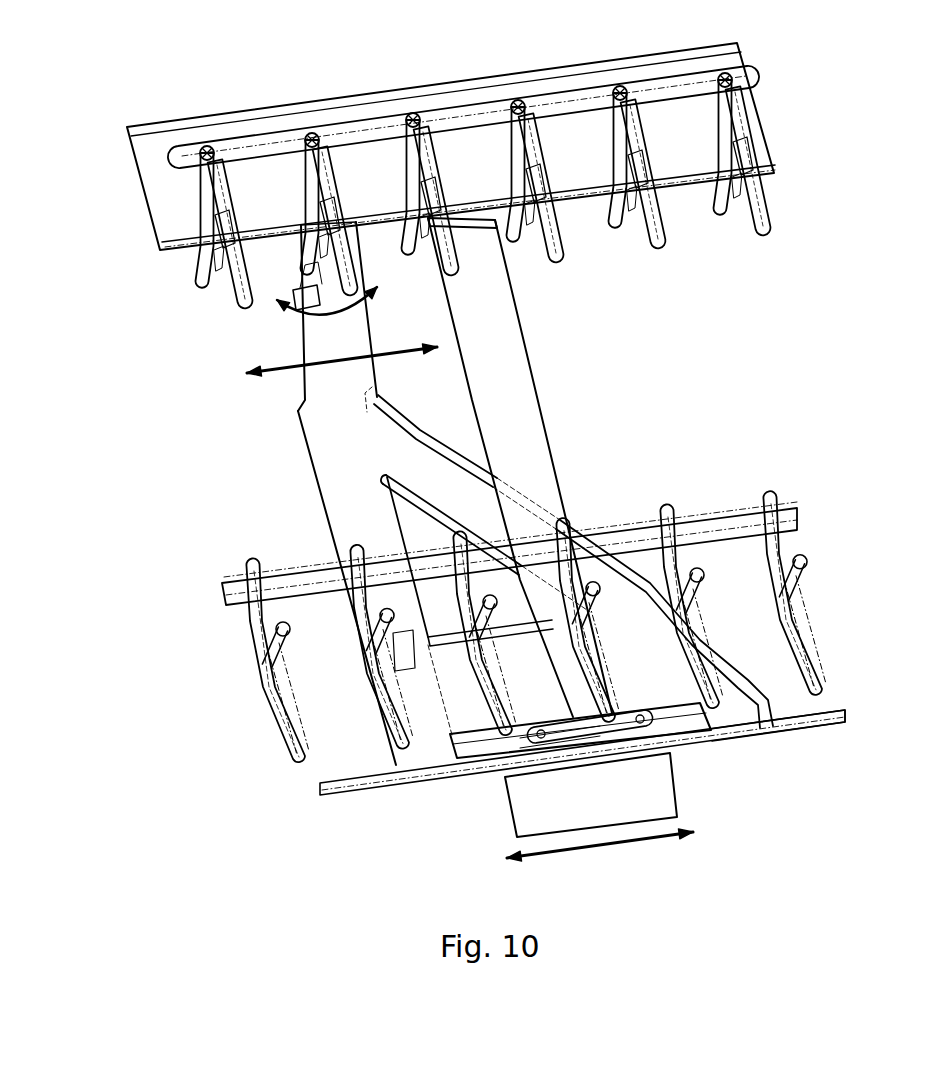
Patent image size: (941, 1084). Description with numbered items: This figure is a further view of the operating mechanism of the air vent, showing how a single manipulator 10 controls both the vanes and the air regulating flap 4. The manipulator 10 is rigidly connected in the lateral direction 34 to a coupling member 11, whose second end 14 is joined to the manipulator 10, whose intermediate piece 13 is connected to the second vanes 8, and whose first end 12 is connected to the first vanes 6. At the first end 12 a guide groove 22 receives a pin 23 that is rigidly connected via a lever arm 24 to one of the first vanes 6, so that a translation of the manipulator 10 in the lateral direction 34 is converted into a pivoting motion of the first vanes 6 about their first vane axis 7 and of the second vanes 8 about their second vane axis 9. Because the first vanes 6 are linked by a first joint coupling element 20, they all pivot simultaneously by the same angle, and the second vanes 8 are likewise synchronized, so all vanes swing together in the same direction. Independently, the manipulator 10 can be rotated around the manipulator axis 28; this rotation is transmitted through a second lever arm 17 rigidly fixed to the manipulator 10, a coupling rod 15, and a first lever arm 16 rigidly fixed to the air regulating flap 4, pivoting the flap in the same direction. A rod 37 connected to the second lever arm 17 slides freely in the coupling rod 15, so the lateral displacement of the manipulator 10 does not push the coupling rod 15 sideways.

The air regulating flap 4 is at (133, 168).
The first vanes 6 is at (770, 198).
The first vane axis 7 is at (733, 203).
The second vanes 8 is at (812, 643).
The second vane axis 9 is at (807, 573).
The manipulator 10 is at (680, 787).
The coupling member 11 is at (327, 493).
The first end 12 is at (302, 338).
The intermediate piece 13 is at (357, 622).
The second end 14 is at (390, 752).
The coupling rod 15 is at (545, 417).
The first lever arm 16 is at (497, 222).
The second lever arm 17 is at (650, 735).
The first joint coupling element 20 is at (747, 75).
The guide groove 22 is at (317, 288).
The pin 23 is at (367, 280).
The lever arm 24 is at (323, 270).
The manipulator axis 28 is at (850, 723).
The lateral direction 34 is at (280, 377).
The rod 37 is at (553, 735).